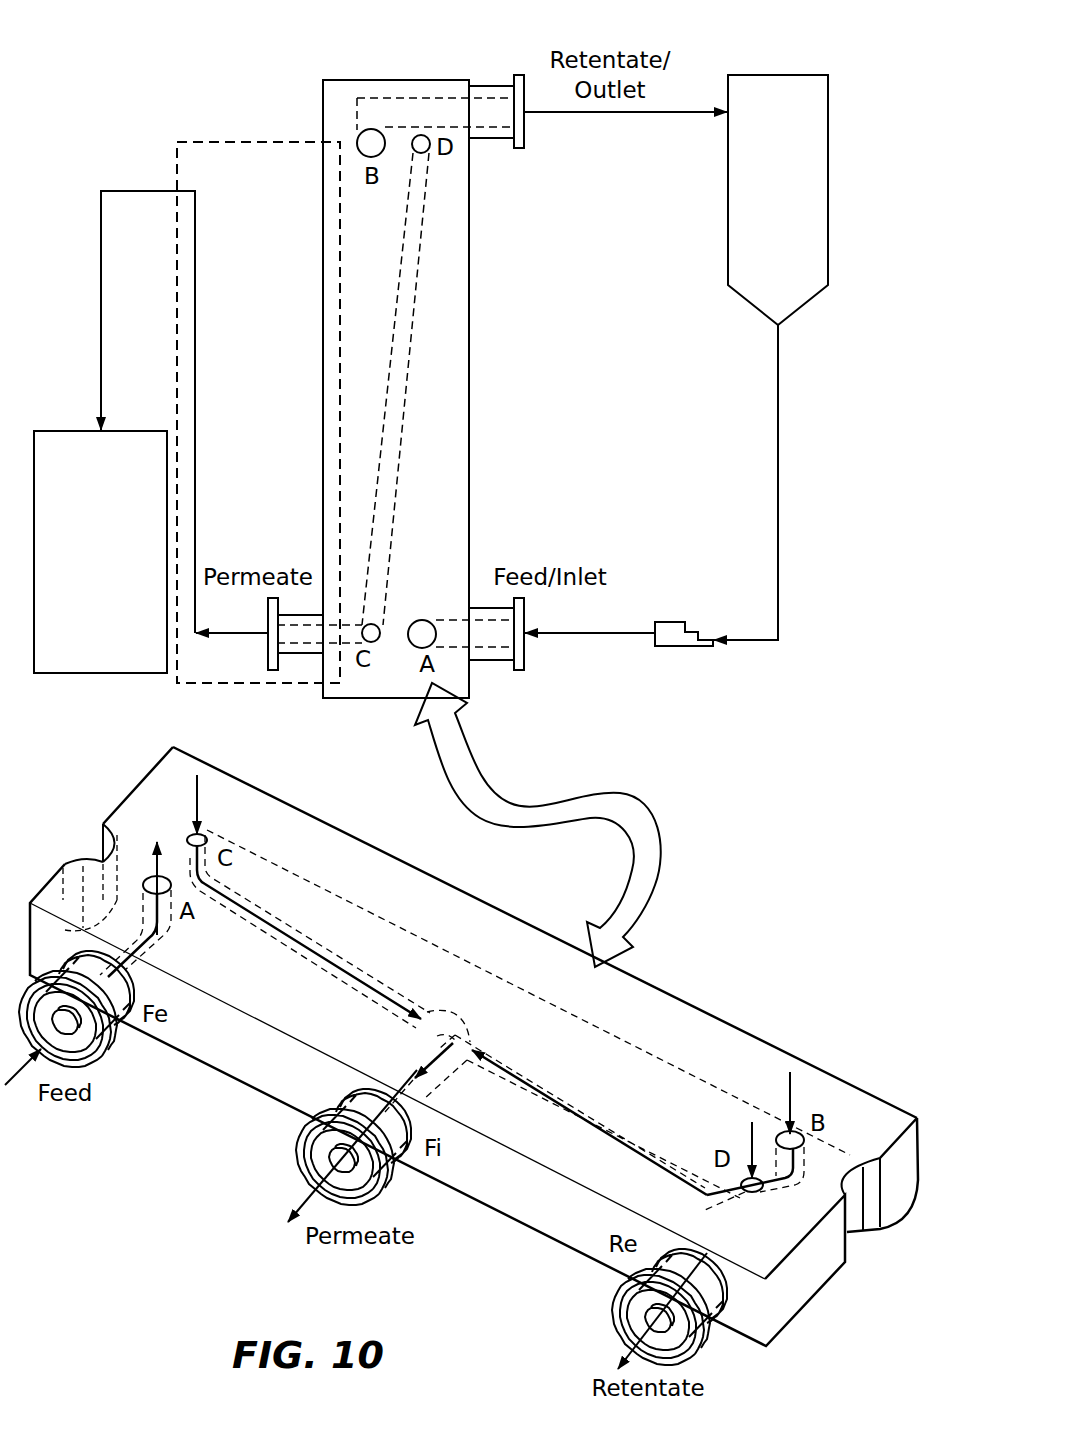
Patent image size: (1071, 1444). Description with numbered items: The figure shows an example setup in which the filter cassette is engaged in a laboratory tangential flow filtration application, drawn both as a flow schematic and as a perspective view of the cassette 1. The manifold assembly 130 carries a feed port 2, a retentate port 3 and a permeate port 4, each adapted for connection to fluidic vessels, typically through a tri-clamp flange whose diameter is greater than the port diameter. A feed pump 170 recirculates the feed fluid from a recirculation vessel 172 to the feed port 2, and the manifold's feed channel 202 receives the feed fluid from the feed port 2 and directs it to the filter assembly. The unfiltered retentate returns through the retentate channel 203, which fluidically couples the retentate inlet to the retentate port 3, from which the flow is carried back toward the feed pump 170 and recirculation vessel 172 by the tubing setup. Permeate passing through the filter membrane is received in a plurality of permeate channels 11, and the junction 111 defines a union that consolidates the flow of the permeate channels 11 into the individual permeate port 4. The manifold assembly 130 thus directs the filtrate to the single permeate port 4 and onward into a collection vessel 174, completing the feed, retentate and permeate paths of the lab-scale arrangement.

The filtration cassette 1 is at (343, 79).
The manifold assembly 130 is at (320, 88).
The retentate channel 203 is at (388, 98).
The retentate port 3 is at (490, 86).
The permeate channels 11 is at (402, 242).
The junction 111 is at (359, 615).
The feed channel 202 is at (447, 620).
The permeate port 4 is at (298, 653).
The feed port 2 is at (495, 662).
The feed pump 170 is at (673, 647).
The recirculation vessel 172 is at (759, 242).
The collection vessel 174 is at (81, 623).